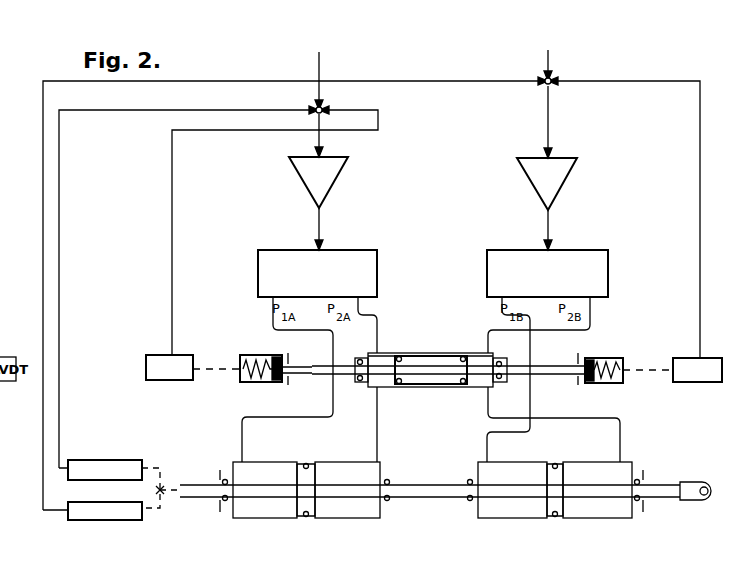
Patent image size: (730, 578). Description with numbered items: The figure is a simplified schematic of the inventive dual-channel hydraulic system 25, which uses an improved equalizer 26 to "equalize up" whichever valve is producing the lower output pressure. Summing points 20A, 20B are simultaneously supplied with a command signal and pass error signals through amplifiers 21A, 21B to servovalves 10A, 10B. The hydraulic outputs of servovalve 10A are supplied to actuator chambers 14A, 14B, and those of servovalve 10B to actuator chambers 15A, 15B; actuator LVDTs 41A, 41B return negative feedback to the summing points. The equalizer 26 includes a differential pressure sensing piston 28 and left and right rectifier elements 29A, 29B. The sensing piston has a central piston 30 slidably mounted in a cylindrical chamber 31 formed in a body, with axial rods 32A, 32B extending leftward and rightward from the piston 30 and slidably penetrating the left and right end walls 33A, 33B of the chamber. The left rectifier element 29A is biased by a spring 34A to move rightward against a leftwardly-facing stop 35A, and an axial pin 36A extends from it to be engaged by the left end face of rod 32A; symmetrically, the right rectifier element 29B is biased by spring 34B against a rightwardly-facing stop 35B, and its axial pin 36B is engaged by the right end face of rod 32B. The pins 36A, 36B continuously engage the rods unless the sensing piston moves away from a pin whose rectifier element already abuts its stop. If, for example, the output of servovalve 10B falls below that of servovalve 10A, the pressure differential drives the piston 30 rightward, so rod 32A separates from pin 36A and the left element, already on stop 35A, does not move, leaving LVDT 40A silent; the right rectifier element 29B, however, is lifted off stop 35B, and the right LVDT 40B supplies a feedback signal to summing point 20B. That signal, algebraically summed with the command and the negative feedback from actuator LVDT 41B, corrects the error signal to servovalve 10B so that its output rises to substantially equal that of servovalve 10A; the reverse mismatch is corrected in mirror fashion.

The servovalve 10A is at (393, 220).
The servovalve 10B is at (628, 220).
The actuator chamber 14A is at (265, 490).
The actuator chamber 14B is at (347, 490).
The actuator chamber 15A is at (512, 490).
The actuator chamber 15B is at (597, 490).
The summing point 20A is at (325, 107).
The summing point 20B is at (556, 78).
The amplifier 21A is at (334, 184).
The amplifier 21B is at (563, 185).
The system 25 is at (187, 527).
The equalizer 26 is at (423, 340).
The differential pressure sensing piston 28 is at (446, 350).
The left rectifier element 29A is at (285, 375).
The right rectifier element 29B is at (584, 375).
The central piston 30 is at (427, 363).
The cylindrical chamber 31 is at (387, 390).
The axial rod 32A is at (355, 360).
The axial rod 32B is at (533, 360).
The left end wall 33A is at (360, 391).
The right end wall 33B is at (502, 382).
The spring 34A is at (250, 382).
The spring 34B is at (615, 383).
The leftwardly-facing stop 35A is at (283, 355).
The rightwardly-facing stop 35B is at (597, 357).
The axial pin 36A is at (292, 362).
The axial pin 36B is at (533, 360).
The LVDT 40A is at (166, 380).
The LVDT 40B is at (698, 382).
The actuator LVDT 41A is at (117, 460).
The actuator LVDT 41B is at (88, 520).